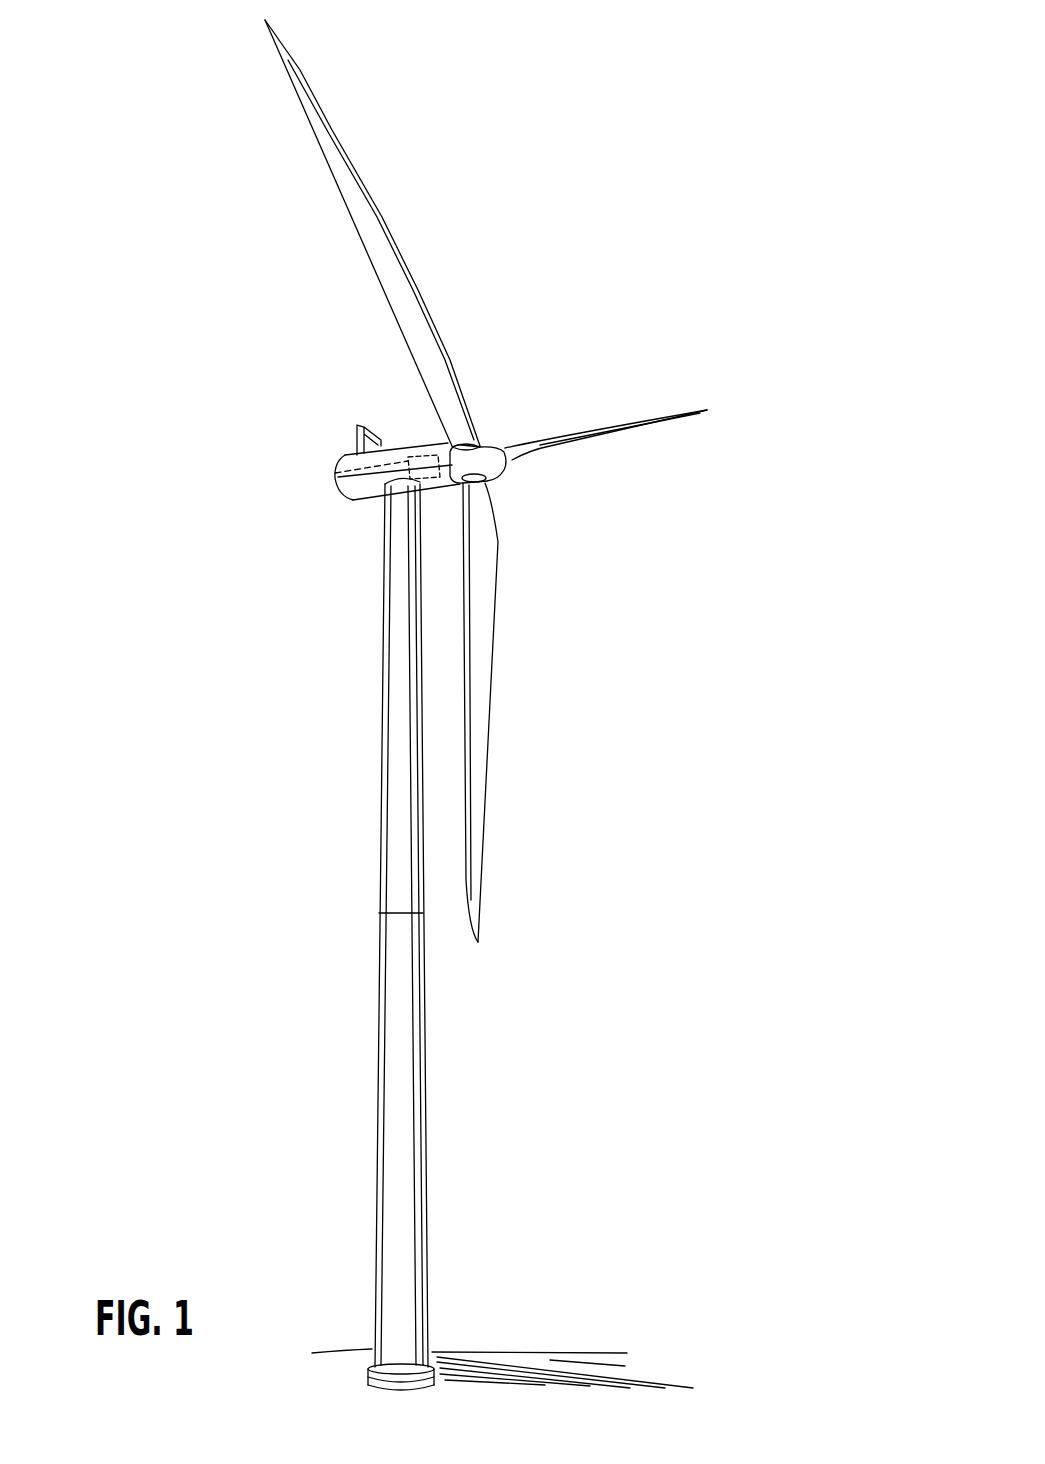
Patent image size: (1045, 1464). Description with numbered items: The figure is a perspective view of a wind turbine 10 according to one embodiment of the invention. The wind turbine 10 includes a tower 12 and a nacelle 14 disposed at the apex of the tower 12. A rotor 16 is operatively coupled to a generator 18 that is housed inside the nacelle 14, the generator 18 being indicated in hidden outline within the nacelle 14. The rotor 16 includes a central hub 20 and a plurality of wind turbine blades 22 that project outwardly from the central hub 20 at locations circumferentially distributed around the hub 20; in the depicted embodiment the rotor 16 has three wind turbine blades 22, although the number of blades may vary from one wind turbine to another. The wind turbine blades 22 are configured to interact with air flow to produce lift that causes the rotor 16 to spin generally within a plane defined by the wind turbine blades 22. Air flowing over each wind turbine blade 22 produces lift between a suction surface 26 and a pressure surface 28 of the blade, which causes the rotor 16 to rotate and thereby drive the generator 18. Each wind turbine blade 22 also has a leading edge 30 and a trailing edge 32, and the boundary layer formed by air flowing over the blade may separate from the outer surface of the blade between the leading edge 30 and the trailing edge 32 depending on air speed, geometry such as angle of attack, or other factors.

The wind turbine 10 is at (589, 238).
The tower 12 is at (378, 712).
The nacelle 14 is at (342, 452).
The rotor 16 is at (508, 471).
The generator 18 is at (335, 473).
The central hub 20 is at (483, 445).
The wind turbine blade 22 is at (355, 231).
The suction surface 26 is at (402, 292).
The pressure surface 28 is at (690, 414).
The leading edge 30 is at (432, 366).
The trailing edge 32 is at (437, 330).